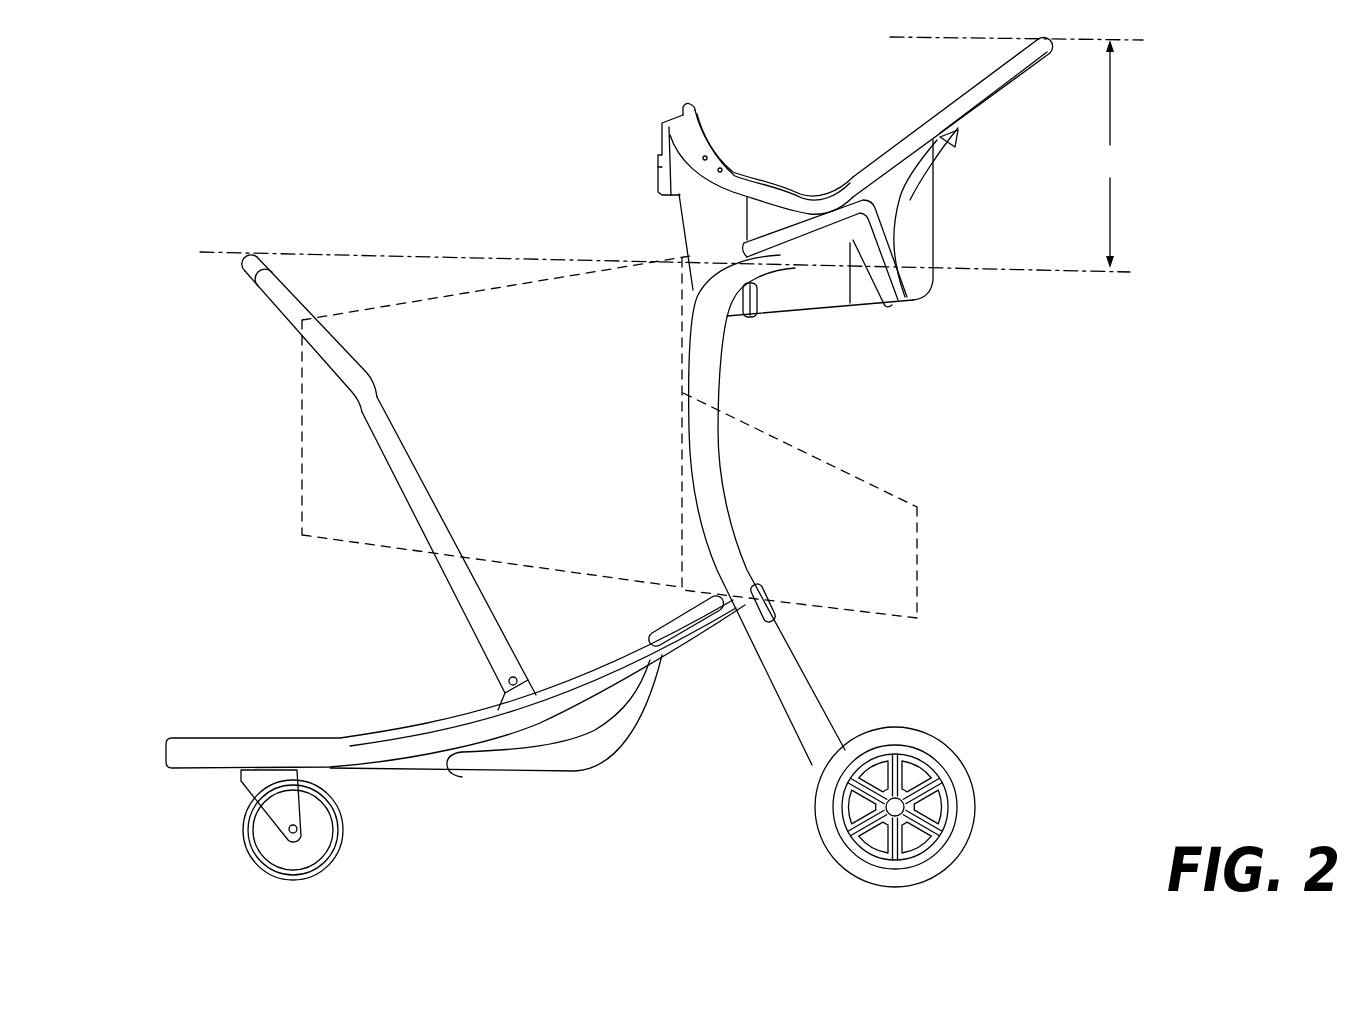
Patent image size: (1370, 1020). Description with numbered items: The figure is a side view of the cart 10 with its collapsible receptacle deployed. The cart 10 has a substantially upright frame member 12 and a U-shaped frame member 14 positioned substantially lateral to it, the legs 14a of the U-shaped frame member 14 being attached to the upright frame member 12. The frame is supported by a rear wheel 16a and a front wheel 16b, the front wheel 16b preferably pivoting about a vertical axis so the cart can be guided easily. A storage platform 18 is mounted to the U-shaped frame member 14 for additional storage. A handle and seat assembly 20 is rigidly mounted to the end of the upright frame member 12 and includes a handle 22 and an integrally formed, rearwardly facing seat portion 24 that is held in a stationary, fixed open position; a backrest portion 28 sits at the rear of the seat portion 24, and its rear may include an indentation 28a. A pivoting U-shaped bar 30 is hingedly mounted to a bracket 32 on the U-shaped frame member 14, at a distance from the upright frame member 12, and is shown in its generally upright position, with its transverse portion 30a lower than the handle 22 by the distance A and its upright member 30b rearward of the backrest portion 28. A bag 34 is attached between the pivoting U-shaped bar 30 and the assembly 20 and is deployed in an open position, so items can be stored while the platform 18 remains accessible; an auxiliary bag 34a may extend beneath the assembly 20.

The cart 10 is at (453, 228).
The upright frame member 12 is at (813, 710).
The U-shaped frame member 14 is at (697, 650).
The leg of the U-shaped frame member 14a is at (773, 614).
The rear wheel 16a is at (955, 847).
The front wheel 16b is at (340, 840).
The storage platform 18 is at (563, 773).
The handle and seat assembly 20 is at (890, 330).
The handle 22 is at (1049, 53).
The seat portion 24 is at (913, 233).
The backrest portion 28 is at (662, 190).
The indentation 28a is at (690, 242).
The pivoting U-shaped bar 30 is at (394, 492).
The transverse portion 30a is at (249, 263).
The upright member 30b is at (470, 604).
The bracket 32 is at (530, 693).
The bag 34 is at (560, 297).
The auxiliary bag 34a is at (923, 587).
The distance A is at (1110, 154).